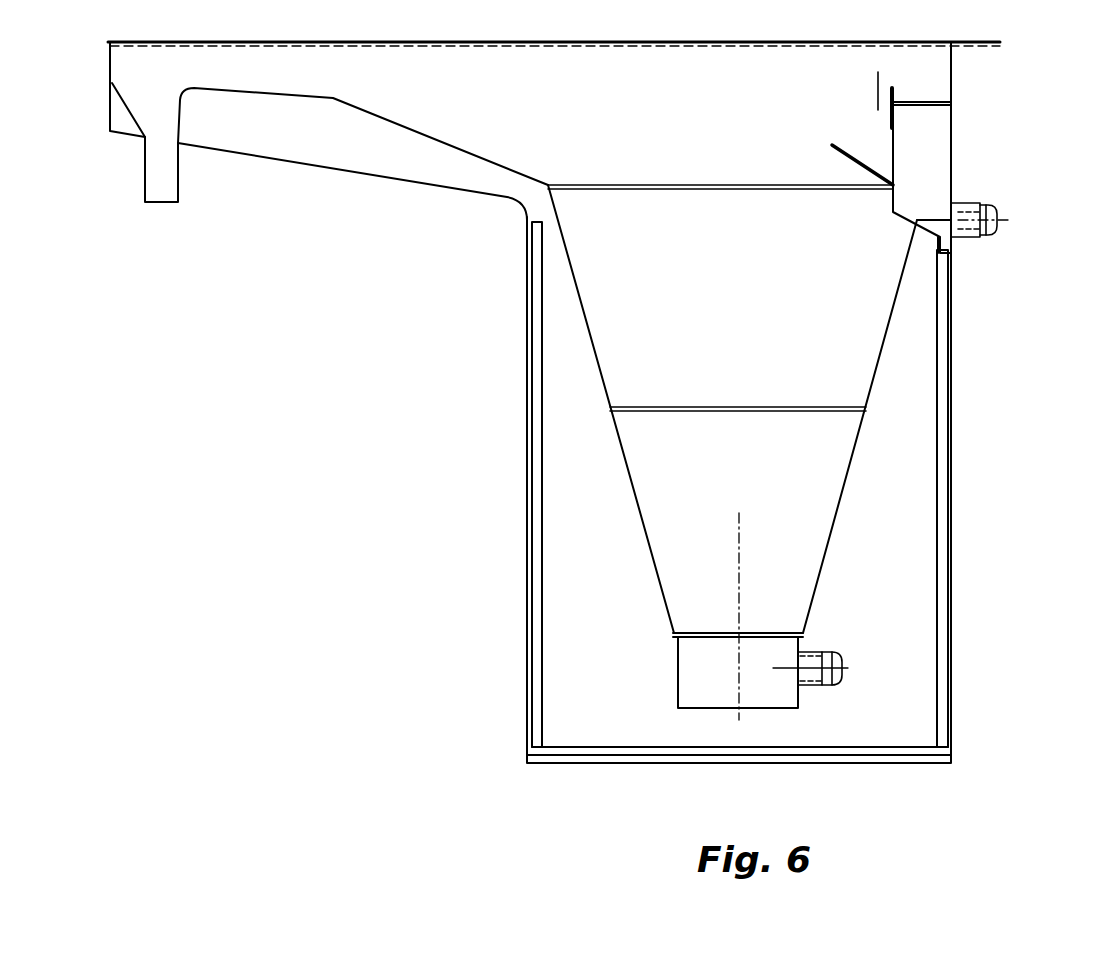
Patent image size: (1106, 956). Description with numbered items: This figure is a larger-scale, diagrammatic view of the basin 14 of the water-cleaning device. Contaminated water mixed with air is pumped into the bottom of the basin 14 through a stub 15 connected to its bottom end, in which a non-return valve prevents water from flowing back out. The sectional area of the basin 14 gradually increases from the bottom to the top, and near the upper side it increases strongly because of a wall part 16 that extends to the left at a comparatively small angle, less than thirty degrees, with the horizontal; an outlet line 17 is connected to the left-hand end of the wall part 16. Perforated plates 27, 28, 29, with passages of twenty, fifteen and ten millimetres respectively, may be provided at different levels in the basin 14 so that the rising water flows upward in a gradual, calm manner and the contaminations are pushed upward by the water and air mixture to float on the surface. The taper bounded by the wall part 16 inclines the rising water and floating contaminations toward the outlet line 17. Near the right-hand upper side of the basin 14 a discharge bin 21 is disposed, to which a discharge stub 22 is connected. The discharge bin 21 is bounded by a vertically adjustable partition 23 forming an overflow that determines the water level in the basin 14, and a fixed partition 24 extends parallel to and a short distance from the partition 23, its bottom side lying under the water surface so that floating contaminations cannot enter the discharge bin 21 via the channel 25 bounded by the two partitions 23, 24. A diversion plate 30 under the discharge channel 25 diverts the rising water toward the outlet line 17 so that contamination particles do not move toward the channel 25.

The basin 14 is at (840, 513).
The stub 15 is at (843, 675).
The wall part 16 is at (320, 90).
The outlet line 17 is at (163, 165).
The discharge bin 21 is at (940, 130).
The discharge stub 22 is at (990, 205).
The vertically adjustable partition 23 is at (893, 92).
The partition 24 is at (873, 80).
The channel 25 is at (883, 83).
The perforated plate 27 is at (703, 633).
The perforated plate 28 is at (718, 412).
The perforated plate 29 is at (720, 189).
The diversion plate 30 is at (850, 157).